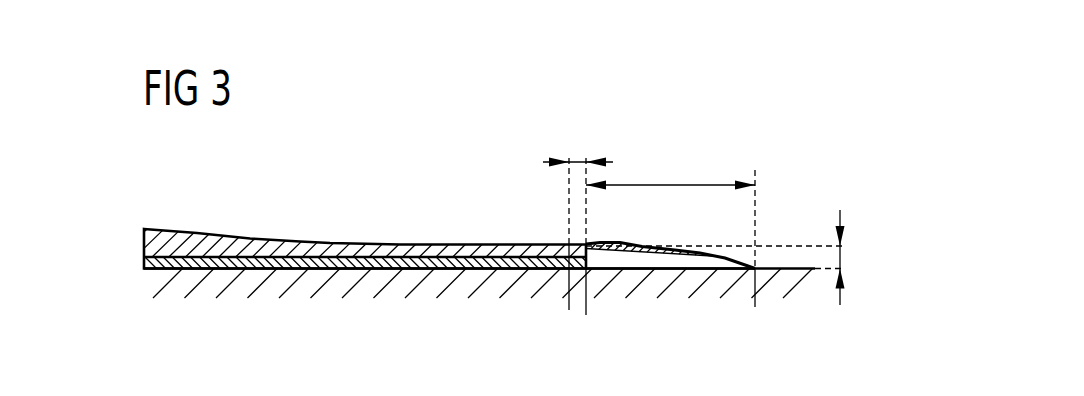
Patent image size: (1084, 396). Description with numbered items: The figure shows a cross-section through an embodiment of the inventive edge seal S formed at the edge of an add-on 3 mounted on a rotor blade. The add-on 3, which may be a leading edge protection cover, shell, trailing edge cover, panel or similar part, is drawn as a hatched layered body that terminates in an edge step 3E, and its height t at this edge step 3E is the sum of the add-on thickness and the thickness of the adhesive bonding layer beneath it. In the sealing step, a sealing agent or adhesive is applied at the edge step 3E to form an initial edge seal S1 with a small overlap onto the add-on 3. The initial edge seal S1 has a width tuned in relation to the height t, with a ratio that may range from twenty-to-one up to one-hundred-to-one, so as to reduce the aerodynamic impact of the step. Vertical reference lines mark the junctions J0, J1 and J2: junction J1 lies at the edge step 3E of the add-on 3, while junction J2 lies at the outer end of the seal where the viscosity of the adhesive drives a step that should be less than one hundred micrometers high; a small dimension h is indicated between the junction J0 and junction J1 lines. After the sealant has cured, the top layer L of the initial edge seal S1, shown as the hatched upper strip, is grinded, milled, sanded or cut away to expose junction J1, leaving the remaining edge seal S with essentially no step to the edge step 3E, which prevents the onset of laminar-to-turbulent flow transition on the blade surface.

The add-on 3 is at (441, 250).
The edge step 3E is at (590, 262).
The top layer L is at (668, 257).
The edge seal S is at (700, 258).
The initial edge seal S1 is at (749, 221).
The junction J0 is at (569, 310).
The junction J1 is at (585, 254).
The junction J2 is at (755, 262).
The height h is at (573, 160).
The height t is at (849, 257).